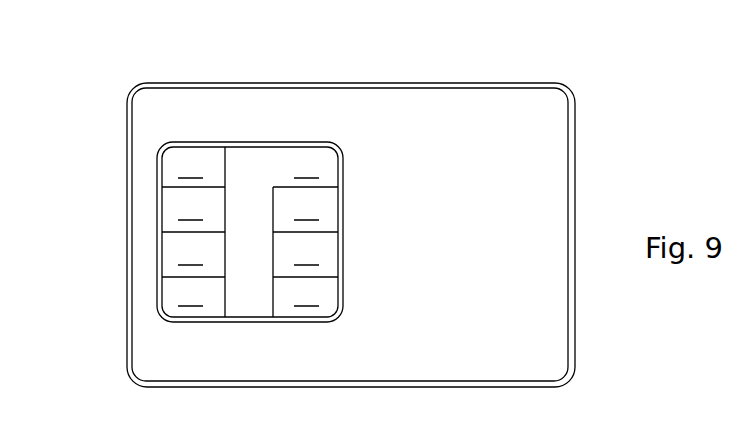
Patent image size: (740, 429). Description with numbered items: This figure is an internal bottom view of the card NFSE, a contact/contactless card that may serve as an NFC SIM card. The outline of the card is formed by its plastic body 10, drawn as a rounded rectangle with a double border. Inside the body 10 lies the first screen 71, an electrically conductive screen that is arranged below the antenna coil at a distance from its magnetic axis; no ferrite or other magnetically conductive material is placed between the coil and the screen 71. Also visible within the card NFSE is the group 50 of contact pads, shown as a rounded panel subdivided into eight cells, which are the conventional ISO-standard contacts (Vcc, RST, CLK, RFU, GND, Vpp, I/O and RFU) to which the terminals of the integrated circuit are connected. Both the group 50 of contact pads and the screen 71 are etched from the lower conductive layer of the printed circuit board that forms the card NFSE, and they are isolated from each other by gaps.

The card NFSE is at (125, 85).
The plastic body 10 is at (340, 83).
The first screen 71 is at (242, 97).
The group of contact pads 50 is at (158, 253).